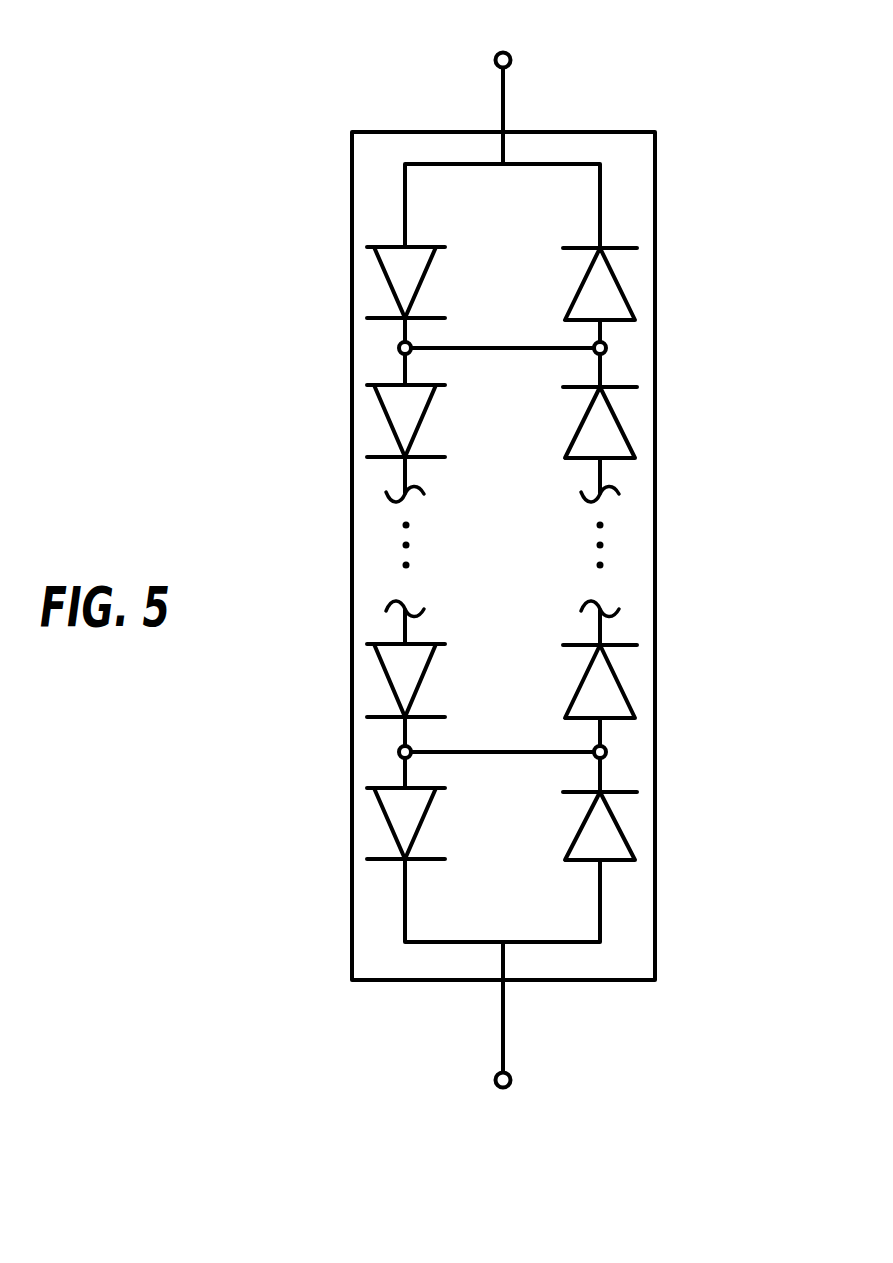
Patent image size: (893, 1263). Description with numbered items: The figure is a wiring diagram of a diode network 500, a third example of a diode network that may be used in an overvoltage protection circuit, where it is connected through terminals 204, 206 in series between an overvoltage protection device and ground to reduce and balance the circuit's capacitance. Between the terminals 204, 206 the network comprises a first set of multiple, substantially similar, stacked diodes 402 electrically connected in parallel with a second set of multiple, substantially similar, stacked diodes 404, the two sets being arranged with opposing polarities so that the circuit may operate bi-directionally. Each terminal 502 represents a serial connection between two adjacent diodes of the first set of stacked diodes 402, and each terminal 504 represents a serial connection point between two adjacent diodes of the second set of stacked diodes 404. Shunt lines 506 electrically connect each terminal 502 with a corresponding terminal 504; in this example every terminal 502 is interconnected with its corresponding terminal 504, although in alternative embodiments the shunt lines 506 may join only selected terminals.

The terminal 204 is at (511, 58).
The terminal 206 is at (511, 1082).
The first set of stacked diodes 402 is at (385, 272).
The second set of stacked diodes 404 is at (621, 290).
The diode network 500 is at (655, 181).
The terminal 502 is at (398, 352).
The terminal 504 is at (607, 346).
The shunt line 506 is at (532, 347).